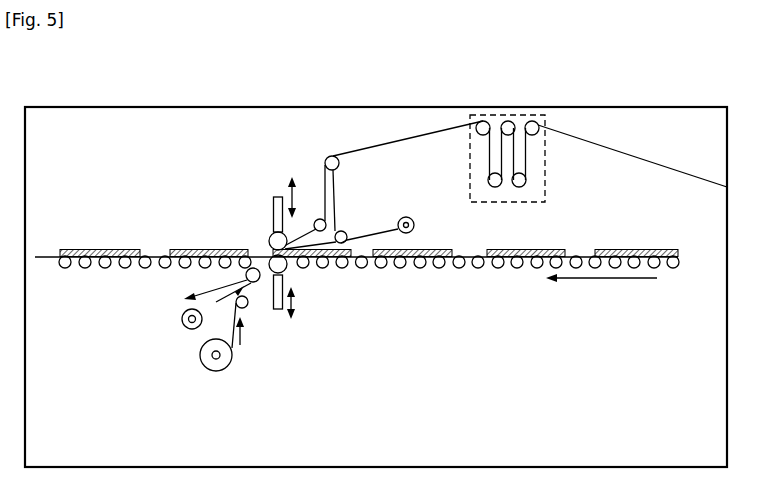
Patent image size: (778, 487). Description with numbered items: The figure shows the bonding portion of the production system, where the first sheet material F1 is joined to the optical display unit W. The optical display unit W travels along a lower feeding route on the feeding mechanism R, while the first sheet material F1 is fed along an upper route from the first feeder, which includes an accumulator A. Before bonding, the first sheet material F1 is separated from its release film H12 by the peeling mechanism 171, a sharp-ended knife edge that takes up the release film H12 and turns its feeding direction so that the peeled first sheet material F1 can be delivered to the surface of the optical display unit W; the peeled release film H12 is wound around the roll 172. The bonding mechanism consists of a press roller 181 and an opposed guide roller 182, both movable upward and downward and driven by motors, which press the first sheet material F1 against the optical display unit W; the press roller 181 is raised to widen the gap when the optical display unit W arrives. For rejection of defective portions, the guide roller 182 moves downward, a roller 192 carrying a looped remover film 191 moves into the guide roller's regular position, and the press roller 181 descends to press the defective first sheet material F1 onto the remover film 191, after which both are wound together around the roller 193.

The peeling mechanism 171 is at (334, 202).
The roll 172 is at (417, 225).
The press roller 181 is at (266, 242).
The guide roller 182 is at (287, 262).
The remover film 191 is at (213, 372).
The roller 192 is at (259, 283).
The roller 193 is at (182, 325).
The release film H12 is at (369, 233).
The optical display unit W is at (179, 244).
The first sheet material F1 is at (231, 249).
The accumulator A is at (527, 189).
The feeding mechanism R is at (523, 283).